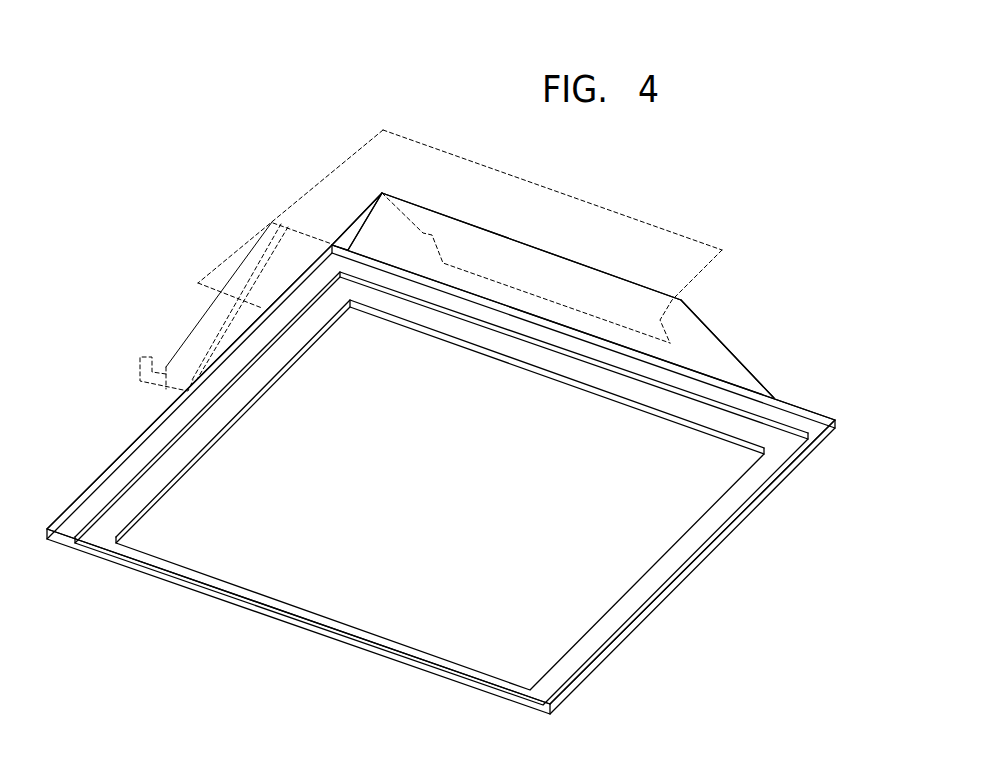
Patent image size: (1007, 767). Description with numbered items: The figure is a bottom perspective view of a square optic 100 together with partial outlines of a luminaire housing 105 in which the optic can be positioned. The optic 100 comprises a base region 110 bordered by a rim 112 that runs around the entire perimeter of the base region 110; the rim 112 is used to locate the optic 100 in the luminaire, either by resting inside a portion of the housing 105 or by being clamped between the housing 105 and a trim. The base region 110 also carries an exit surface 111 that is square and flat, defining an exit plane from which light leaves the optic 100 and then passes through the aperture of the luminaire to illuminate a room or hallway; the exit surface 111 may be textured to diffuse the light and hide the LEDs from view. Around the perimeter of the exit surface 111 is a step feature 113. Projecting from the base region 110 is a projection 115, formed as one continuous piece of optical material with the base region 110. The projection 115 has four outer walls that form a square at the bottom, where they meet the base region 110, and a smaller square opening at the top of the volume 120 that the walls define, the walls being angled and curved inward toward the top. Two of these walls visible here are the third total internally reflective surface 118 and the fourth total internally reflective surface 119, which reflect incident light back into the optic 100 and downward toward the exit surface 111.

The square optic 100 is at (816, 120).
The housing 105 is at (212, 270).
The base region 110 is at (872, 431).
The exit surface 111 is at (593, 602).
The rim 112 is at (810, 410).
The step feature 113 is at (702, 530).
The projection 115 is at (790, 314).
The third total internally reflective surface 118 is at (352, 230).
The fourth total internally reflective surface 119 is at (688, 322).
The volume 120 is at (393, 233).